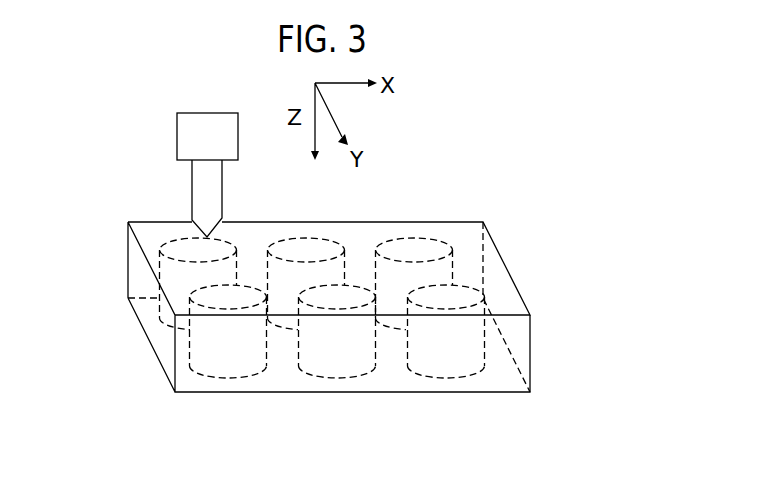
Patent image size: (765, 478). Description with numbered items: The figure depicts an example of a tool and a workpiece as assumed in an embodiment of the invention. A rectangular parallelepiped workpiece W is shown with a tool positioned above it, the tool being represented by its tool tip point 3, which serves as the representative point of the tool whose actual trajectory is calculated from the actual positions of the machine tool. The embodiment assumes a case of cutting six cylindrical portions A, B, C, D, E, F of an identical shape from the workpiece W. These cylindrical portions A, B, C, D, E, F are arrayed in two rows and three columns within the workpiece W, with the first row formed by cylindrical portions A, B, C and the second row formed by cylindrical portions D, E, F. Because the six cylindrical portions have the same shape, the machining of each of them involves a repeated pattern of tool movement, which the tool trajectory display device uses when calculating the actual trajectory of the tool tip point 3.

The tool tip point 3 is at (210, 236).
The workpiece W is at (510, 270).
The cylindrical portion A is at (177, 255).
The cylindrical portion B is at (310, 250).
The cylindrical portion C is at (417, 251).
The cylindrical portion D is at (208, 360).
The cylindrical portion E is at (343, 367).
The cylindrical portion F is at (457, 363).